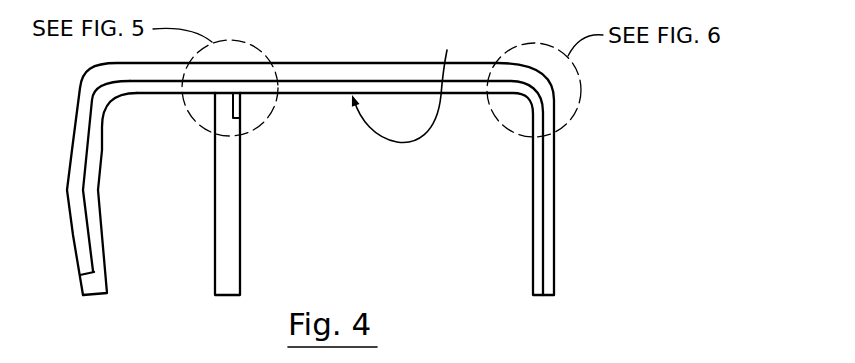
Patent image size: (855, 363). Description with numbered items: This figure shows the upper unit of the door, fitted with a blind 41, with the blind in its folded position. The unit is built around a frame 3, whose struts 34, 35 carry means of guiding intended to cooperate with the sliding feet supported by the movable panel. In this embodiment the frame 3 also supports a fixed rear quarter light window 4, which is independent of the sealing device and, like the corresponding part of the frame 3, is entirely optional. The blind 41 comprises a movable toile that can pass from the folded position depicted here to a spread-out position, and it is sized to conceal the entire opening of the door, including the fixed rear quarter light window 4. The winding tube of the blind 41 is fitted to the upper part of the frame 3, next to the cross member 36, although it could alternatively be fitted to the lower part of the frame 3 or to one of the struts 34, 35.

The frame 3 is at (68, 152).
The fixed rear quarter light window 4 is at (117, 203).
The strut 34 is at (230, 245).
The strut 35 is at (547, 213).
The cross member 36 is at (390, 67).
The blind 41 is at (408, 82).